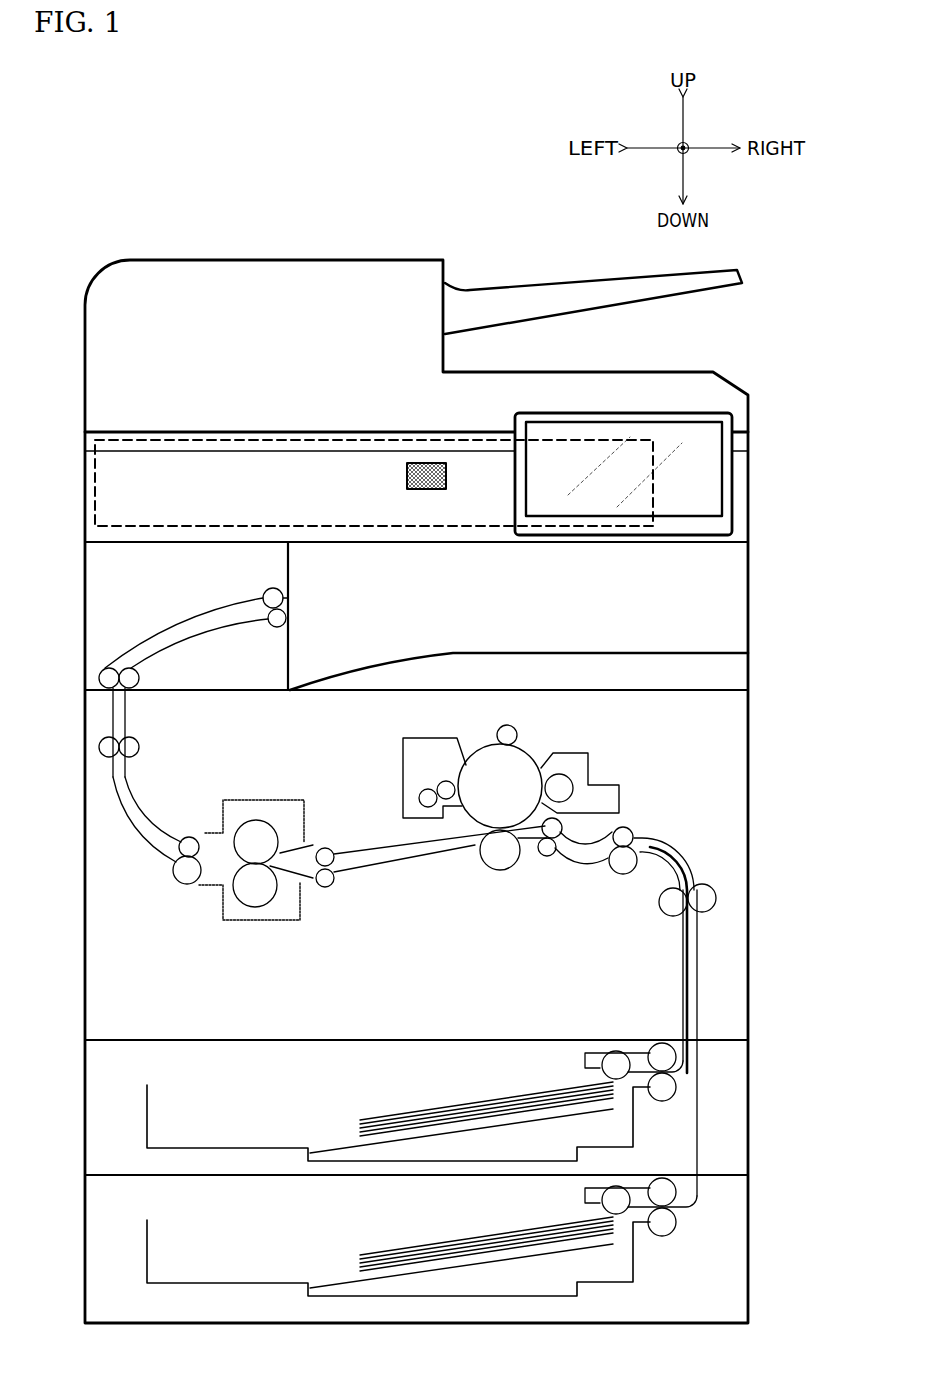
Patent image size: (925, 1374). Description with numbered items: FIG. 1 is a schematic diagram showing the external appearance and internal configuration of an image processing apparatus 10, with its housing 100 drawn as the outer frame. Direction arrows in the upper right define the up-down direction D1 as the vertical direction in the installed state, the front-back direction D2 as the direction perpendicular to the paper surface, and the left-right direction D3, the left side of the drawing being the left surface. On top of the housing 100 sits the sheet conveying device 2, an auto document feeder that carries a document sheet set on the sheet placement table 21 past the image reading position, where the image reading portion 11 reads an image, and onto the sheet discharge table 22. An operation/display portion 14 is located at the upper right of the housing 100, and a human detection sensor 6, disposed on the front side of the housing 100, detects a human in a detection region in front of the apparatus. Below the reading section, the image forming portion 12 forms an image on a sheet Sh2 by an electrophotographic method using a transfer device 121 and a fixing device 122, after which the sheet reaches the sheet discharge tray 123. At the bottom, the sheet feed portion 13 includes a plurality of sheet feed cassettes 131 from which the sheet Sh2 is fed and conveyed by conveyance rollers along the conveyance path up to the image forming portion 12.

The sheet conveying device 2 is at (138, 278).
The image processing apparatus 10 is at (372, 258).
The image reading portion 11 is at (93, 455).
The human detection sensor 6 is at (423, 490).
The operation/display portion 14 is at (660, 412).
The sheet placement table 21 is at (492, 293).
The sheet discharge table 22 is at (515, 372).
The housing 100 is at (748, 395).
The image forming portion 12 is at (350, 775).
The transfer device 121 is at (480, 852).
The fixing device 122 is at (223, 800).
The sheet discharge tray 123 is at (580, 653).
The sheet feed portion 13 is at (422, 1169).
The sheet feed cassette 131 is at (272, 1148).
The sheet Sh2 is at (683, 870).
The up-down direction D1 is at (680, 136).
The front-back direction D2 is at (676, 158).
The left-right direction D3 is at (714, 152).